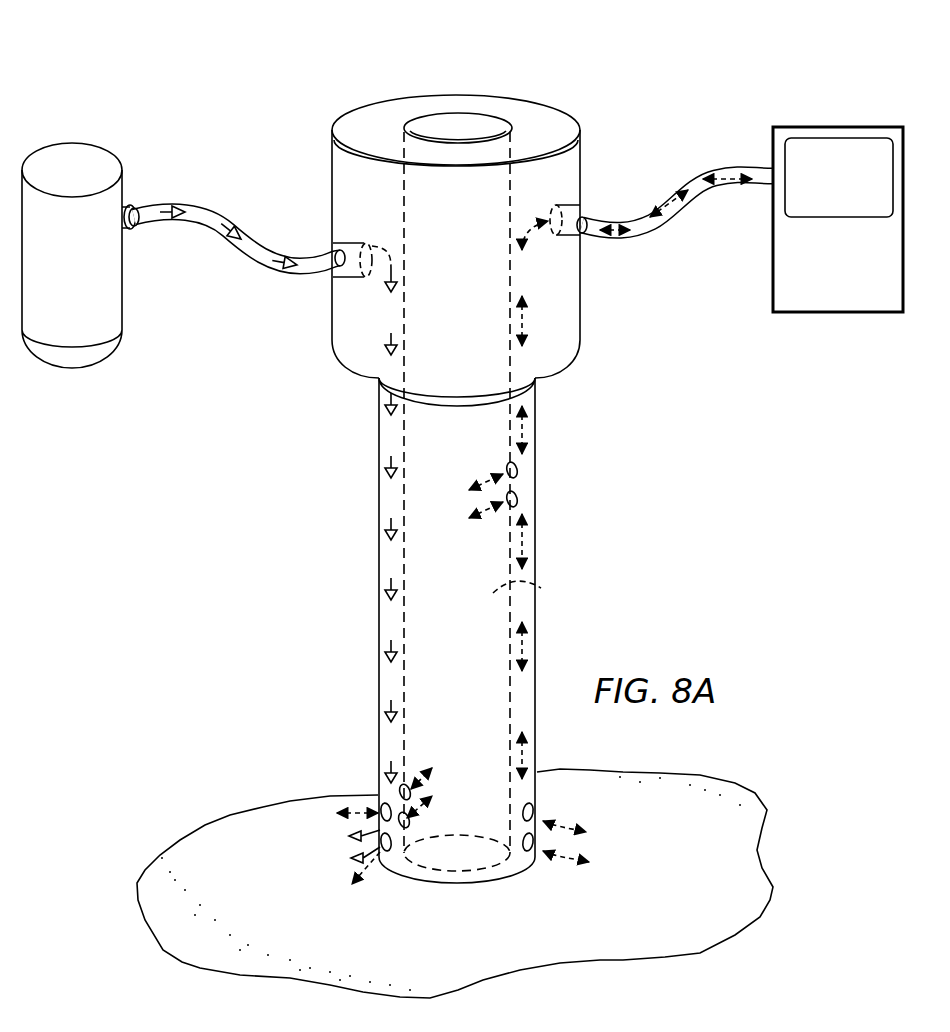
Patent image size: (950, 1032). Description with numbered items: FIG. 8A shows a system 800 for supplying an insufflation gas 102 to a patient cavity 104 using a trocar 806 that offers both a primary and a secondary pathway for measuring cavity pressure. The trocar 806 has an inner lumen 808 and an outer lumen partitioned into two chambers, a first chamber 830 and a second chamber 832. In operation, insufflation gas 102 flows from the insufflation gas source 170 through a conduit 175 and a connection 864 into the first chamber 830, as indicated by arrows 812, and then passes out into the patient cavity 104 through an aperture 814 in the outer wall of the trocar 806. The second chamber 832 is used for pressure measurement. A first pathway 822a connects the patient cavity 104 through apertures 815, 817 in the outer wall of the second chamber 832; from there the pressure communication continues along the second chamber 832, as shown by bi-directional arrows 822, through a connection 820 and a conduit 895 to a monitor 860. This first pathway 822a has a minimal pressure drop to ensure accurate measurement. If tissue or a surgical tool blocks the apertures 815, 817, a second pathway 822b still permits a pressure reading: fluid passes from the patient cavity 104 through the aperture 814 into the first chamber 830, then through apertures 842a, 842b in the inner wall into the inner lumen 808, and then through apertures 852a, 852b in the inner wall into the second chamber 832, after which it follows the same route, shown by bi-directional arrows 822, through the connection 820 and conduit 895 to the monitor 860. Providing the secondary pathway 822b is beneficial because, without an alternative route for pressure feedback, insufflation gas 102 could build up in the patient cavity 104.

The system 800 is at (241, 78).
The insufflation gas 102 is at (92, 305).
The insufflation gas source 170 is at (72, 368).
The conduit 175 is at (208, 207).
The arrows 812 is at (215, 228).
The connection 864 is at (333, 292).
The trocar 806 is at (293, 396).
The first chamber 830 is at (386, 432).
The connection 820 is at (574, 206).
The bi-directional arrows 822 is at (671, 204).
The conduit 895 is at (715, 170).
The monitor 860 is at (838, 313).
The second chamber 832 is at (529, 470).
The aperture 852a is at (528, 498).
The aperture 852b is at (508, 463).
The second pathway 822b is at (493, 488).
The inner lumen 808 is at (546, 590).
The aperture 842a is at (410, 820).
The aperture 842b is at (408, 789).
The aperture 814 is at (383, 808).
The aperture 815 is at (533, 812).
The aperture 817 is at (529, 851).
The first pathway 822a is at (573, 858).
The patient cavity 104 is at (662, 863).